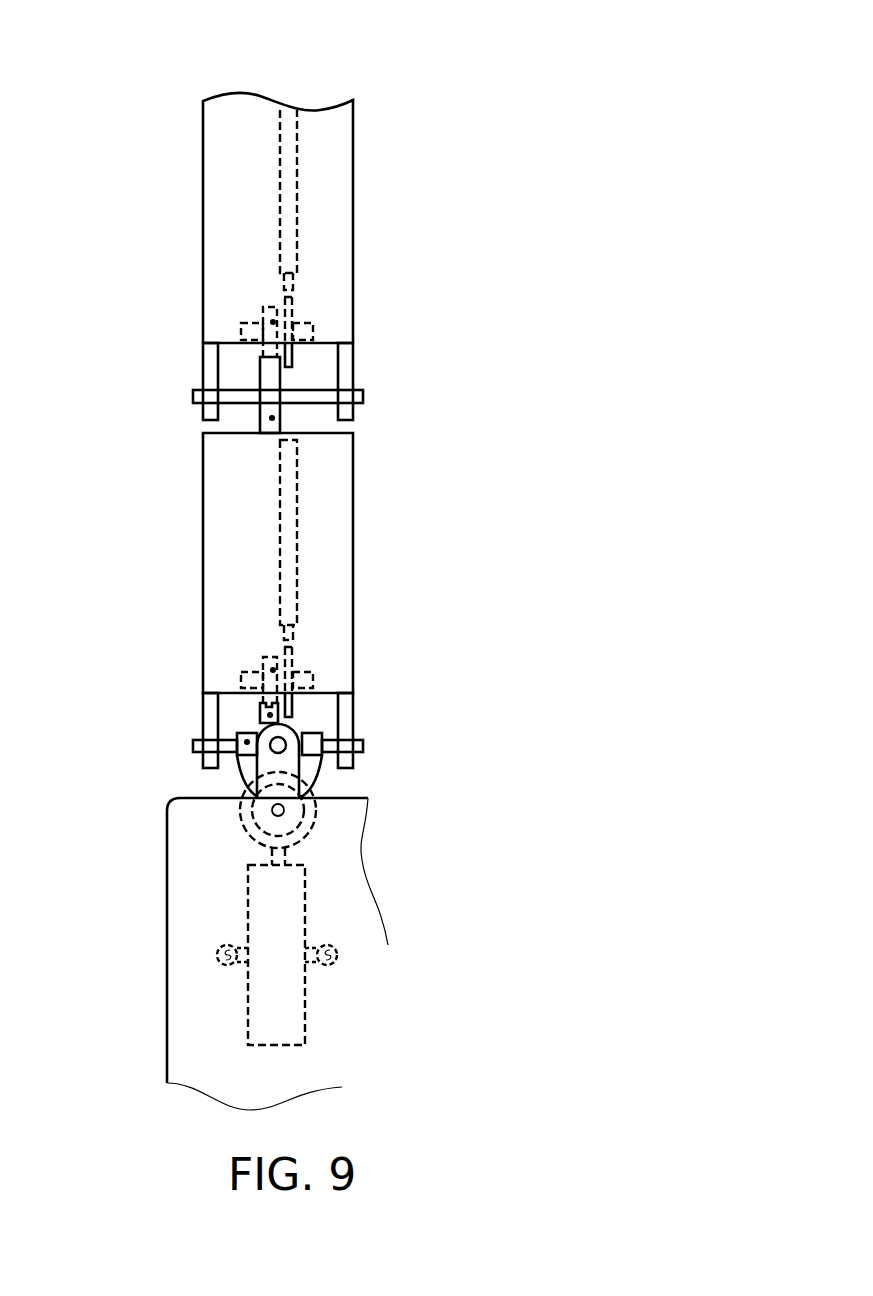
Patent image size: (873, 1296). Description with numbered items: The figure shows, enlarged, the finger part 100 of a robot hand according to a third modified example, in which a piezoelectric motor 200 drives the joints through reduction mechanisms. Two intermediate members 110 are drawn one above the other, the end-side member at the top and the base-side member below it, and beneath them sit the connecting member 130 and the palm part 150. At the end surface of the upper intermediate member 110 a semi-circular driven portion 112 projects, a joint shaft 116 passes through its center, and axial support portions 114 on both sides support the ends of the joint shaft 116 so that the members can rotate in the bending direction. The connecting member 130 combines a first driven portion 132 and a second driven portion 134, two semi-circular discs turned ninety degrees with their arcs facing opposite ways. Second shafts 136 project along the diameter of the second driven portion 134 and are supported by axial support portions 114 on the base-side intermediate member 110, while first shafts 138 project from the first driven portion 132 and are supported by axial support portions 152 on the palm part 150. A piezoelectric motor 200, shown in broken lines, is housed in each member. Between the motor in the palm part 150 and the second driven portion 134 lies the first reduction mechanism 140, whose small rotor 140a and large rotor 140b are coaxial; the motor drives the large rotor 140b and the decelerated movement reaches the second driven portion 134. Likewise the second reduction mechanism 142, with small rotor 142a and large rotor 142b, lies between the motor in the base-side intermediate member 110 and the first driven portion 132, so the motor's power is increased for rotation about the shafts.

The finger part 100 is at (166, 79).
The intermediate member 110 is at (353, 156).
The driven portion 112 is at (282, 465).
The axial support portions 114 is at (203, 370).
The joint shaft 116 is at (313, 390).
The connecting member 130 is at (240, 747).
The first driven portion 132 is at (260, 717).
The second driven portion 134 is at (240, 733).
The second shafts 136 is at (230, 753).
The first shafts 138 is at (253, 785).
The first reduction mechanism 140 is at (392, 829).
The small rotor 140a is at (312, 813).
The large rotor 140b is at (305, 832).
The second reduction mechanism 142 is at (393, 471).
The small rotor 142a is at (292, 290).
The large rotor 142b is at (297, 297).
The palm part 150 is at (167, 917).
The axial support portions 152 is at (305, 782).
The piezoelectric motor 200 is at (297, 213).